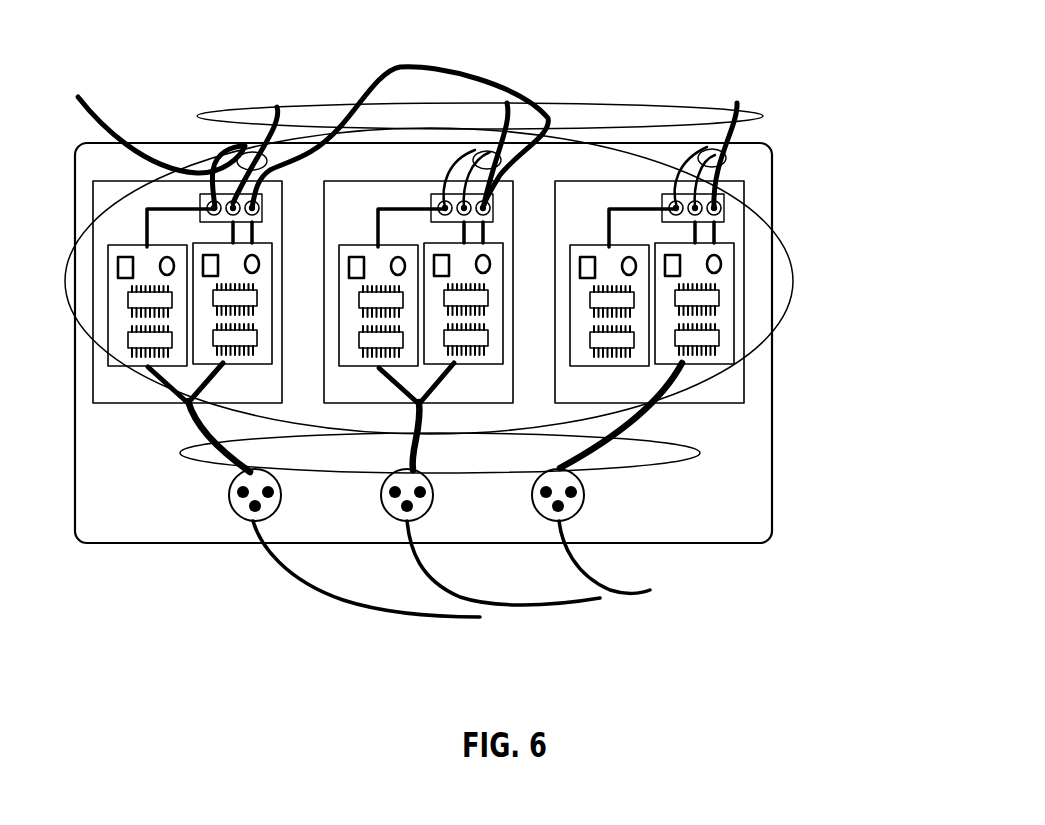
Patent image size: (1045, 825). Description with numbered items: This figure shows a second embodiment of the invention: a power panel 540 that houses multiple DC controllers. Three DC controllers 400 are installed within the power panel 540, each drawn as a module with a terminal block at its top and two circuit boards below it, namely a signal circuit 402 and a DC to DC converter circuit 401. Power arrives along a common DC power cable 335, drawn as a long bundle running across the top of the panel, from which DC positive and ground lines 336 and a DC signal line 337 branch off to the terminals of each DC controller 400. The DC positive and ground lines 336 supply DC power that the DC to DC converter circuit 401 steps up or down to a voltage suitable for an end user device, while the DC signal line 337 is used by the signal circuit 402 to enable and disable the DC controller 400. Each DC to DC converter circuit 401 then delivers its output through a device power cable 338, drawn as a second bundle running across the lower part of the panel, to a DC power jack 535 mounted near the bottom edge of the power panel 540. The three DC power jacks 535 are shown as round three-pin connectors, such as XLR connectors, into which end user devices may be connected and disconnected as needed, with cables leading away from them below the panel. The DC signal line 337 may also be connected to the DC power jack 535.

The DC power cable 335 is at (303, 106).
The DC positive and ground lines 336 is at (725, 163).
The DC signal line 337 is at (152, 139).
The device power cable 338 is at (708, 476).
The DC controller 400 is at (798, 288).
The DC to DC converter circuit 401 is at (712, 363).
The signal circuit 402 is at (608, 363).
The DC power jack 535 is at (480, 617).
The power panel 540 is at (93, 545).